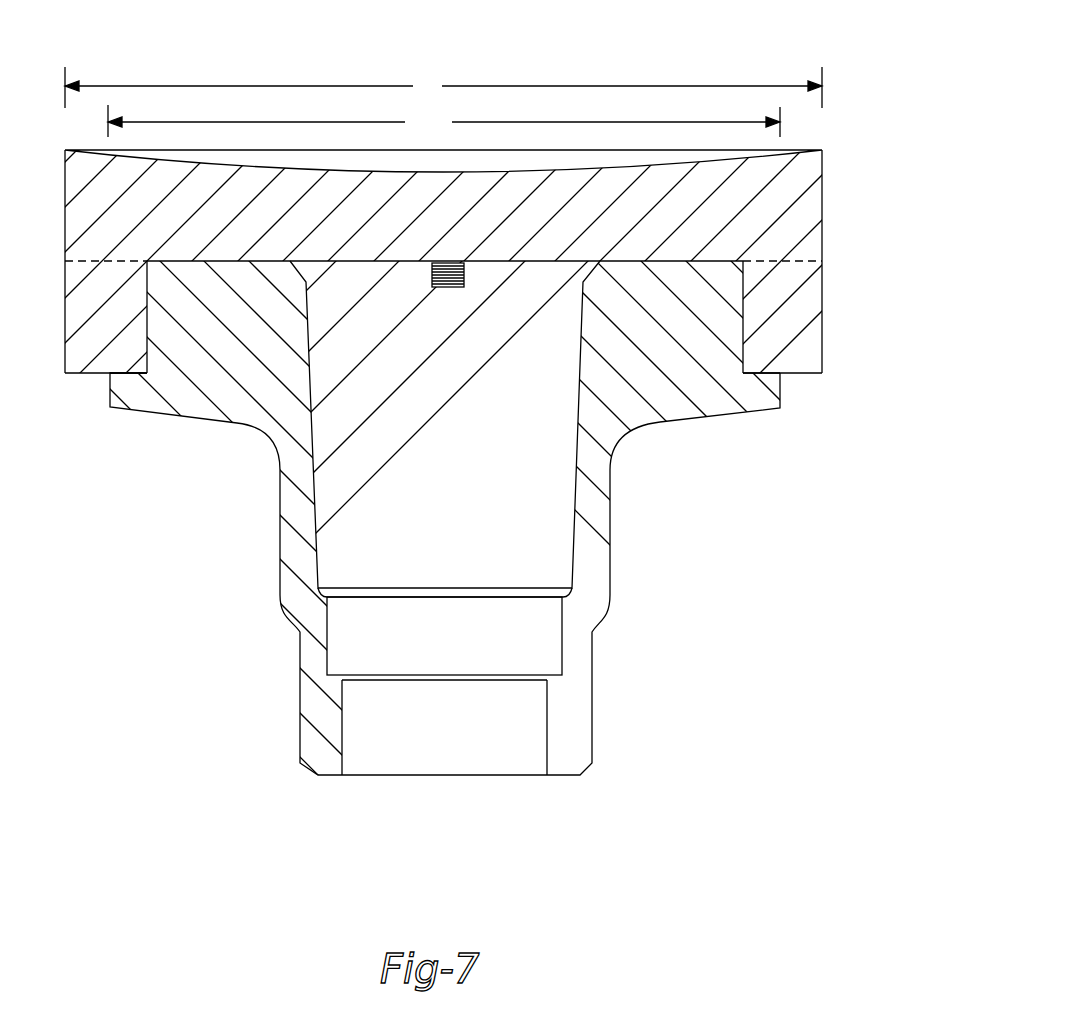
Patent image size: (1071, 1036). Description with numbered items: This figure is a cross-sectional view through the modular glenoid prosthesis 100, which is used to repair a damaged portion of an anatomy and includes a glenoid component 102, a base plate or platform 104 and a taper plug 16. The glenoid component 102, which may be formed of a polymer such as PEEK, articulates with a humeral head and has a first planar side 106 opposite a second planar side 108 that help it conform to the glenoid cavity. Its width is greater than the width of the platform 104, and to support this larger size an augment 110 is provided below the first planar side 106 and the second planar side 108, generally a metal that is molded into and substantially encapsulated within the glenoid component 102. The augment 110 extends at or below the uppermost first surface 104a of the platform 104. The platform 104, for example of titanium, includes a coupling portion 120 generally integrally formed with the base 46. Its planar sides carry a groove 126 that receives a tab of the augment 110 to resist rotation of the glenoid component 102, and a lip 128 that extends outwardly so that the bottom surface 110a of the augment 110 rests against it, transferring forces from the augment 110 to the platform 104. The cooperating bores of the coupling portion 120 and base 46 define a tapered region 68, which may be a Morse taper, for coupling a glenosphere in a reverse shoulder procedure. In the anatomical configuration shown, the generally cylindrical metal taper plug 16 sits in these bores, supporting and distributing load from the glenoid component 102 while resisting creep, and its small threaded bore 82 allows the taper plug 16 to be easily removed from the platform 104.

The modular glenoid prosthesis 100 is at (670, 56).
The glenoid component 102 is at (827, 149).
The platform 104 is at (687, 459).
The first surface 104a is at (665, 261).
The first planar side 106 is at (65, 213).
The second planar side 108 is at (822, 215).
The augment 110 is at (60, 342).
The bottom surface 110a is at (92, 375).
The coupling portion 120 is at (798, 388).
The groove 126 is at (147, 304).
The lip 128 is at (125, 371).
The threaded bore 82 is at (444, 288).
The tapered region 68 is at (575, 481).
The taper plug 16 is at (412, 601).
The base 46 is at (617, 638).